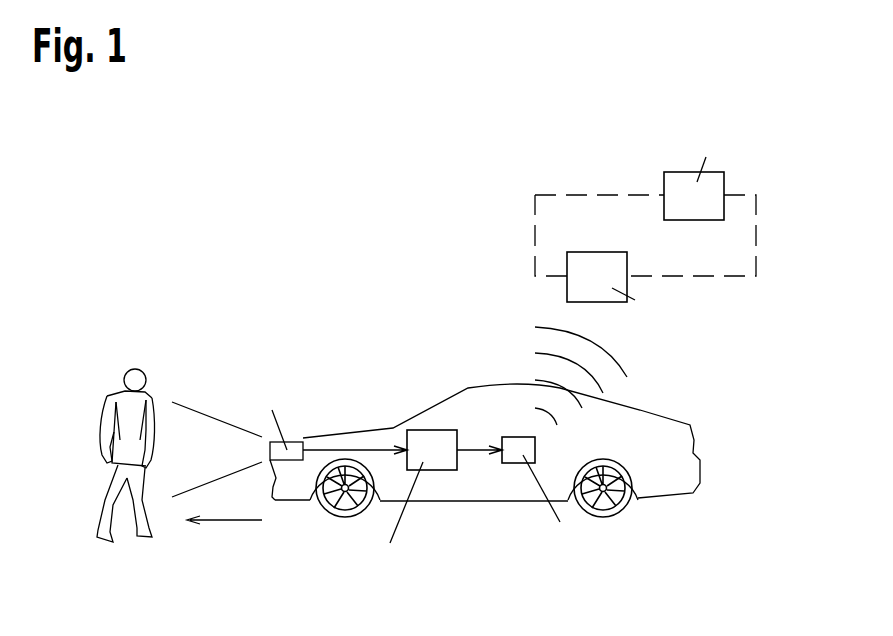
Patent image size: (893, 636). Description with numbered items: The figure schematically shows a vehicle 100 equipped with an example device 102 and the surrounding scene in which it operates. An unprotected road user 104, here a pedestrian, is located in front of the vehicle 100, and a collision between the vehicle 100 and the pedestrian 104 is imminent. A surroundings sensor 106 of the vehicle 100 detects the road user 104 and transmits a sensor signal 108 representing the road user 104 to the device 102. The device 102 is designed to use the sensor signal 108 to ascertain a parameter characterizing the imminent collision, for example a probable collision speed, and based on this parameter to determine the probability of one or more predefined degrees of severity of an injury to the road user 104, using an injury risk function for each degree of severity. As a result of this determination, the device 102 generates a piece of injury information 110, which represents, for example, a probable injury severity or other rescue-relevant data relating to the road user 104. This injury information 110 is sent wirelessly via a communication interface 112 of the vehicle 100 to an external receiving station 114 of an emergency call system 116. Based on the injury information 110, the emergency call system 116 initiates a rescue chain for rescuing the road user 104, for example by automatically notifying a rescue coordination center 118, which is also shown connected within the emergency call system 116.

The vehicle 100 is at (427, 408).
The device 102 is at (433, 472).
The unprotected road user 104 is at (139, 368).
The surroundings sensor 106 is at (283, 462).
The sensor signal 108 is at (350, 450).
The injury information 110 is at (482, 450).
The communication interface 112 is at (522, 463).
The external receiving station 114 is at (567, 298).
The emergency call system 116 is at (727, 277).
The rescue coordination center 118 is at (663, 173).